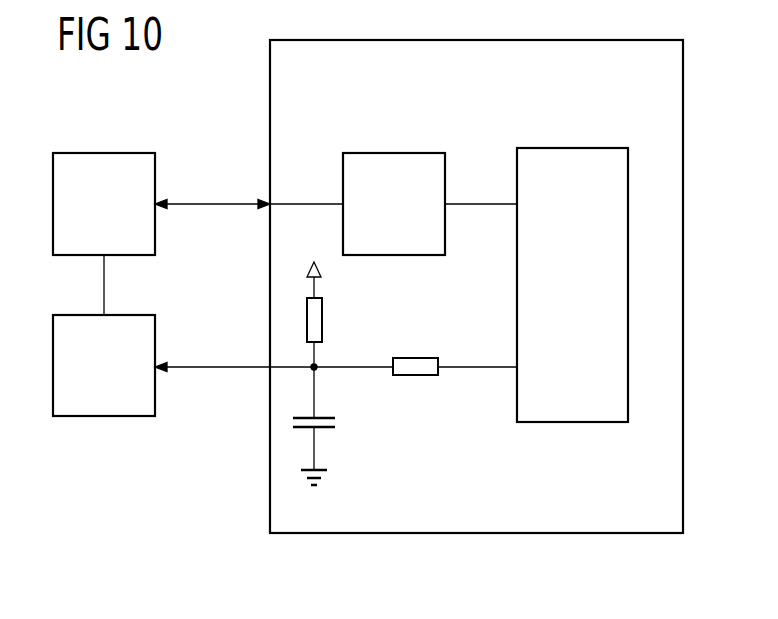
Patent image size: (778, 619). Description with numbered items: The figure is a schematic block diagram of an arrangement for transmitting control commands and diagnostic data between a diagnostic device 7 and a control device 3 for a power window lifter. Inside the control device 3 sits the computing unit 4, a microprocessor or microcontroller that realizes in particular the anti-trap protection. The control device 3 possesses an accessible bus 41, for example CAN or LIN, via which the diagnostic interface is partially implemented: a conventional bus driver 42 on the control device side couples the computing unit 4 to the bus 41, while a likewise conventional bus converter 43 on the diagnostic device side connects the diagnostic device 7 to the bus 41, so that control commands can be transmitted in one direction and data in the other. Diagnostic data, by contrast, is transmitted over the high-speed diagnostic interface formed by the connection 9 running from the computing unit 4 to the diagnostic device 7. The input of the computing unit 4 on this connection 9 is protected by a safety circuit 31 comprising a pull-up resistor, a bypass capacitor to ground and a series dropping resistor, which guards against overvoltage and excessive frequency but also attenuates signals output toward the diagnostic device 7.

The control device 3 is at (477, 533).
The computing unit 4 is at (572, 148).
The diagnostic device 7 is at (103, 416).
The connection 9 is at (220, 367).
The safety circuit 31 is at (348, 393).
The bus 41 is at (308, 204).
The bus driver 42 is at (393, 153).
The bus converter 43 is at (103, 153).